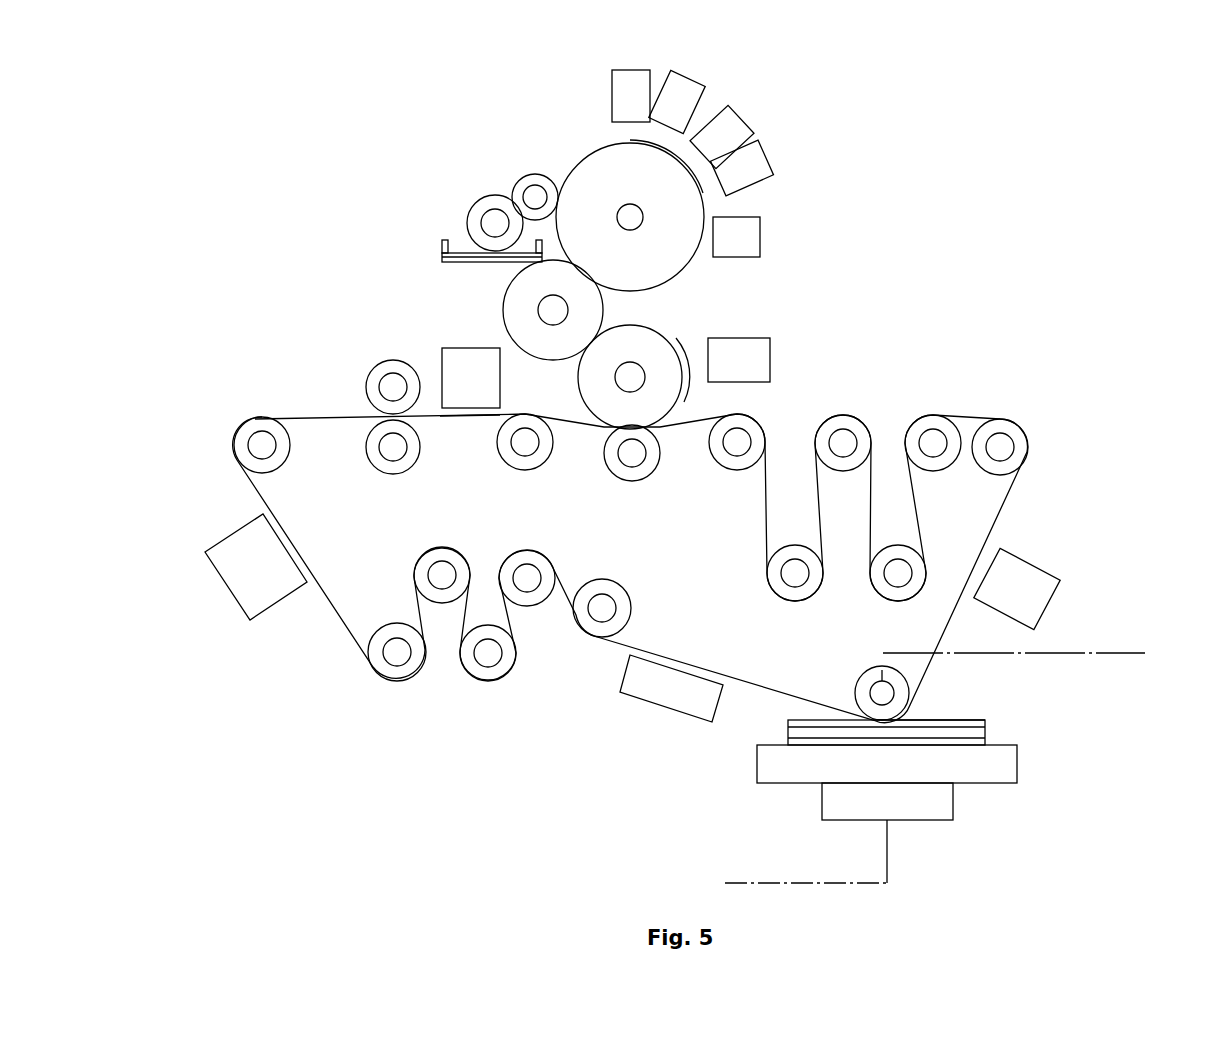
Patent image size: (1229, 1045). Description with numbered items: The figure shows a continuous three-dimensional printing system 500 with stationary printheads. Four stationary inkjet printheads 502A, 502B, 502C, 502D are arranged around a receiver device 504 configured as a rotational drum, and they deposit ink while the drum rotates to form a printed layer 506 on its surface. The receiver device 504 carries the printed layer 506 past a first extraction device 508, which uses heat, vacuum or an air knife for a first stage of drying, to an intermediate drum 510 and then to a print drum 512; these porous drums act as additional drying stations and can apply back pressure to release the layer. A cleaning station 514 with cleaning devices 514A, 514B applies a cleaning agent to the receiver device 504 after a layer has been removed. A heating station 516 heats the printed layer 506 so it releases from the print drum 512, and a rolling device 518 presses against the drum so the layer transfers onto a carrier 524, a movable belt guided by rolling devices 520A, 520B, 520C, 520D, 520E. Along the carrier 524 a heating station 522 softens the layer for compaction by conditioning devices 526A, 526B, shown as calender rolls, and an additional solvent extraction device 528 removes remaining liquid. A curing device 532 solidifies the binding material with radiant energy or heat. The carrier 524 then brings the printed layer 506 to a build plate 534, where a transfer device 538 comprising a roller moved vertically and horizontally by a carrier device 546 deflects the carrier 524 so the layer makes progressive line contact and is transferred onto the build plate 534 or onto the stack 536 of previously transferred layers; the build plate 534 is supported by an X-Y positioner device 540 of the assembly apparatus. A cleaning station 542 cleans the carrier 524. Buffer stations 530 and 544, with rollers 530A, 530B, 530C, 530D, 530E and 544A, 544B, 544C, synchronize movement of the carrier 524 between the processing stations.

The 3D printing system 500 is at (225, 138).
The stationary printhead 502A is at (622, 70).
The stationary printhead 502B is at (684, 77).
The stationary printhead 502C is at (733, 107).
The stationary printhead 502D is at (771, 150).
The receiver device 504 is at (590, 152).
The printed layer 506 is at (658, 148).
The extraction device 508 is at (762, 243).
The intermediate drum 510 is at (607, 305).
The print drum 512 is at (666, 331).
The cleaning station 514 is at (454, 205).
The cleaning device 514A is at (513, 182).
The cleaning device 514B is at (467, 222).
The heating station 516 is at (774, 363).
The rolling device 518 is at (656, 477).
The rolling device 520A is at (537, 415).
The rolling device 520B is at (238, 438).
The rolling device 520C is at (1022, 430).
The rolling device 520D is at (938, 417).
The rolling device 520E is at (762, 428).
The heating station 522 is at (466, 349).
The carrier 524 is at (466, 420).
The conditioning device 526A is at (374, 362).
The conditioning device 526B is at (396, 476).
The solvent extraction device 528 is at (268, 609).
The buffer station 530 is at (505, 625).
The roller 530A is at (388, 676).
The roller 530B is at (447, 546).
The roller 530C is at (505, 683).
The roller 530D is at (522, 549).
The roller 530E is at (622, 578).
The curing device 532 is at (667, 703).
The build plate 534 is at (1020, 784).
The stack of printed layers 536 is at (1000, 729).
The transfer device 538 is at (856, 691).
The X-Y positioner device 540 is at (781, 858).
The cleaning station 542 is at (1041, 562).
The buffer station 544 is at (813, 496).
The roller 544A is at (842, 416).
The roller 544B is at (776, 590).
The roller 544C is at (884, 603).
The carrier device 546 is at (1040, 654).